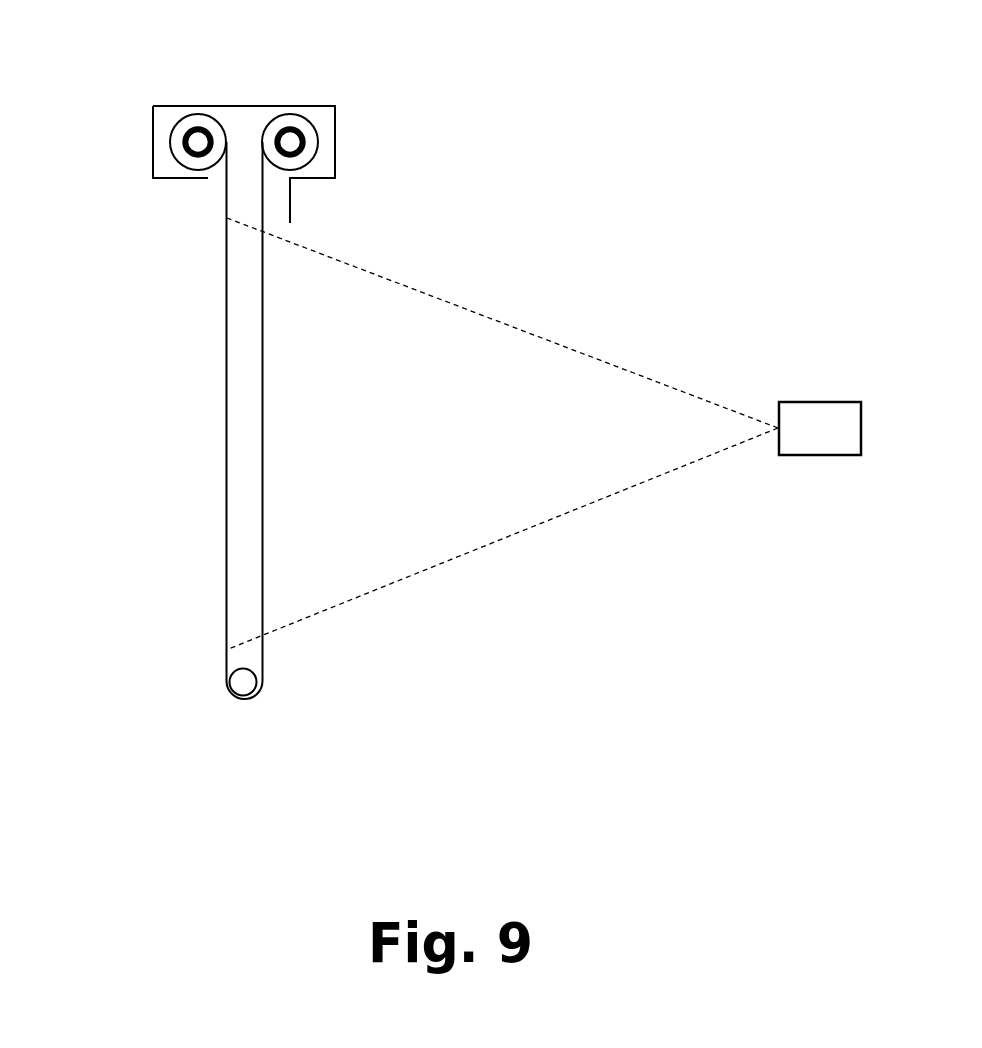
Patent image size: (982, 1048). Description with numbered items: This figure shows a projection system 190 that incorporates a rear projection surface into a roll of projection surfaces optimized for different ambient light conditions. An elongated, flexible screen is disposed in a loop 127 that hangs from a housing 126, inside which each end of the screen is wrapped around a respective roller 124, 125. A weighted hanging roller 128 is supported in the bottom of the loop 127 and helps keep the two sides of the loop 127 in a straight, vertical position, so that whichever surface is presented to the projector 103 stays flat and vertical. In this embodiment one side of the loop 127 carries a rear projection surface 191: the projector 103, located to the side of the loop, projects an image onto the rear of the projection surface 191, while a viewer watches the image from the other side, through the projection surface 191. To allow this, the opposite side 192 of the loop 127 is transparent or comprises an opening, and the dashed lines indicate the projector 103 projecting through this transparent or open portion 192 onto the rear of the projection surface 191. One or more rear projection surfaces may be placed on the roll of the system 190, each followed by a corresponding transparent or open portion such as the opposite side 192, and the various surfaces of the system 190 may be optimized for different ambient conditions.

The projector 103 is at (815, 418).
The roller 124 is at (290, 142).
The roller 125 is at (198, 142).
The housing 126 is at (243, 106).
The loop 127 is at (244, 420).
The weighted hanging roller 128 is at (242, 682).
The projection system 190 is at (290, 668).
The rear projection surface 191 is at (225, 417).
The opposite side of the loop 192 is at (263, 388).